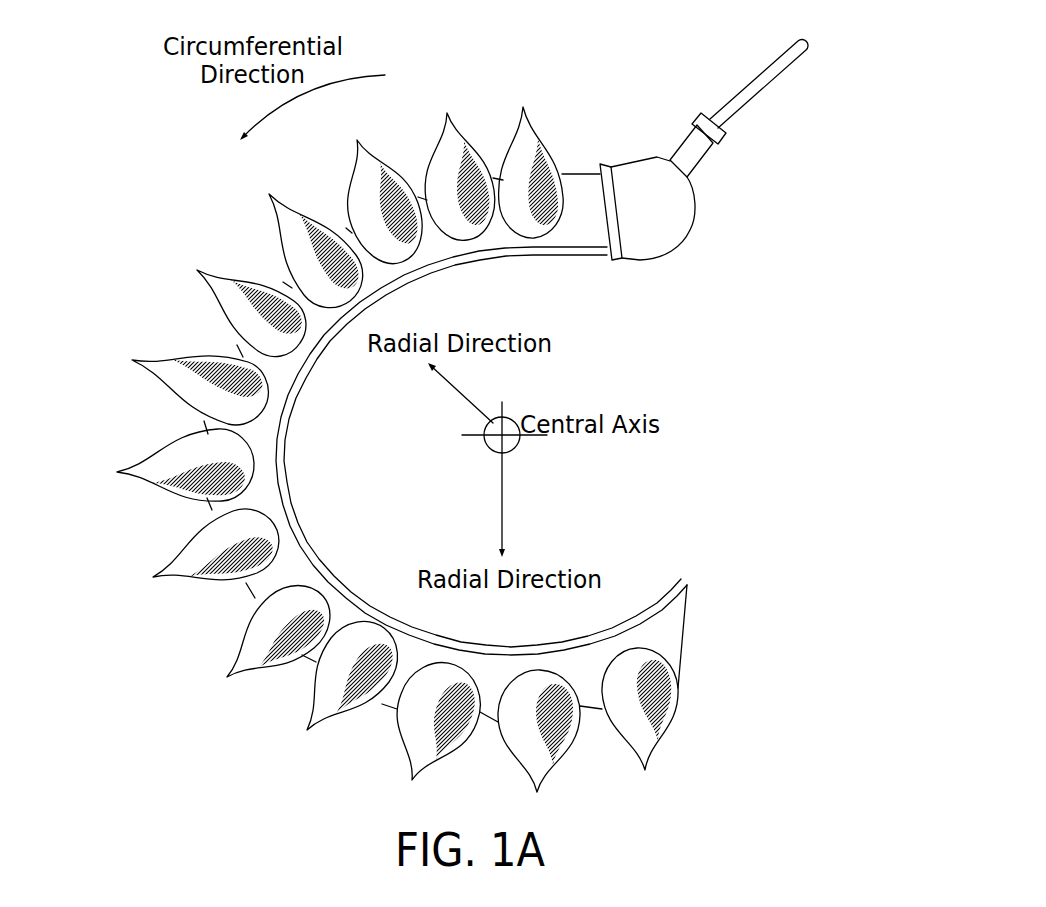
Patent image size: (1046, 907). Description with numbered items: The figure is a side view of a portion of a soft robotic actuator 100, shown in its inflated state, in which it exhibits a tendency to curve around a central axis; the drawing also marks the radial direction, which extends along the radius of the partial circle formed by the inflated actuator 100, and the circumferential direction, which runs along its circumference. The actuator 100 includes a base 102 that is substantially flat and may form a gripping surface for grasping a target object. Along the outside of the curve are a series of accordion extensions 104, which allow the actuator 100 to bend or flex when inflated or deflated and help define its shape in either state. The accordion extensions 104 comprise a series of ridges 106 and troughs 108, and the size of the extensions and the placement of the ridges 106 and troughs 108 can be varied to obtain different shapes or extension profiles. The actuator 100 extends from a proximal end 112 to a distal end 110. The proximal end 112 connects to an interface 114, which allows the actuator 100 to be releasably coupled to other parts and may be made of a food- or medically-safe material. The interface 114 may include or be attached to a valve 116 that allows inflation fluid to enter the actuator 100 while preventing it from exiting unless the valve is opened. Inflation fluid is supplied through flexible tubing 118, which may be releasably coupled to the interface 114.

The soft robotic actuator 100 is at (286, 545).
The base 102 is at (490, 252).
The accordion extensions 104 is at (355, 449).
The ridges 106 is at (152, 366).
The troughs 108 is at (120, 419).
The distal end 110 is at (714, 566).
The proximal end 112 is at (705, 258).
The interface 114 is at (622, 160).
The valve 116 is at (702, 157).
The flexible tubing 118 is at (768, 63).